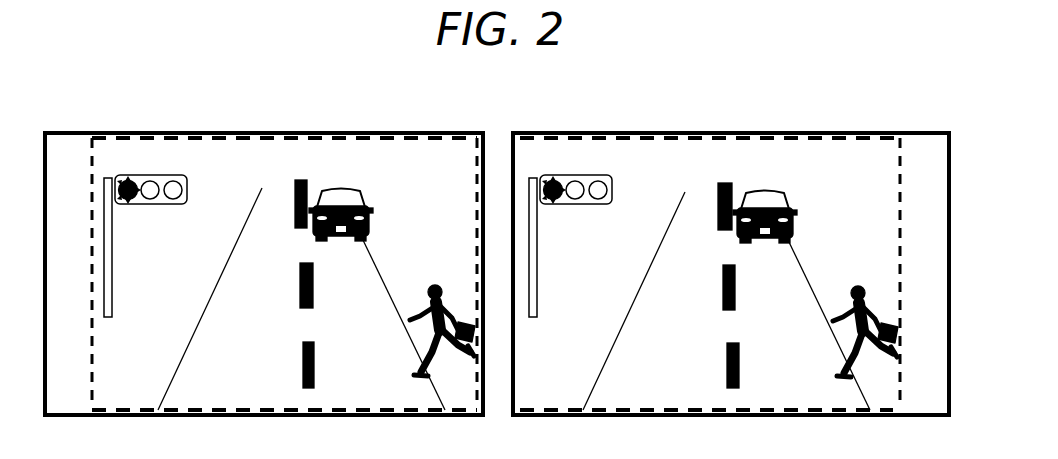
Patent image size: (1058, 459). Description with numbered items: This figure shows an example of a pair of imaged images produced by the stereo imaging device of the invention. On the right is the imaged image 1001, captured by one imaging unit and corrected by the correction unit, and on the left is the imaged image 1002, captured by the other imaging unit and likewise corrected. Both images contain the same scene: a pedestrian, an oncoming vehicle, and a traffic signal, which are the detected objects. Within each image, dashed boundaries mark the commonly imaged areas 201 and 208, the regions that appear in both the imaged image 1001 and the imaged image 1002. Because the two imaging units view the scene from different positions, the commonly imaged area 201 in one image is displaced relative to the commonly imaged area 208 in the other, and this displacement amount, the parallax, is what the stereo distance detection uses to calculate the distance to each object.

The imaged image 1001 is at (738, 254).
The imaged image 1002 is at (264, 253).
The commonly imaged area 201 is at (925, 271).
The commonly imaged area 208 is at (73, 271).